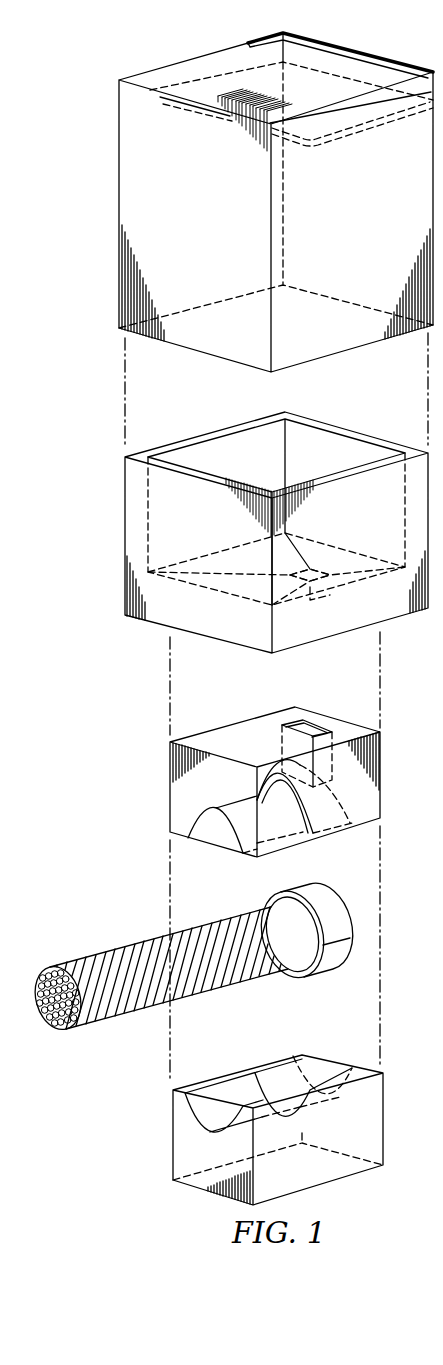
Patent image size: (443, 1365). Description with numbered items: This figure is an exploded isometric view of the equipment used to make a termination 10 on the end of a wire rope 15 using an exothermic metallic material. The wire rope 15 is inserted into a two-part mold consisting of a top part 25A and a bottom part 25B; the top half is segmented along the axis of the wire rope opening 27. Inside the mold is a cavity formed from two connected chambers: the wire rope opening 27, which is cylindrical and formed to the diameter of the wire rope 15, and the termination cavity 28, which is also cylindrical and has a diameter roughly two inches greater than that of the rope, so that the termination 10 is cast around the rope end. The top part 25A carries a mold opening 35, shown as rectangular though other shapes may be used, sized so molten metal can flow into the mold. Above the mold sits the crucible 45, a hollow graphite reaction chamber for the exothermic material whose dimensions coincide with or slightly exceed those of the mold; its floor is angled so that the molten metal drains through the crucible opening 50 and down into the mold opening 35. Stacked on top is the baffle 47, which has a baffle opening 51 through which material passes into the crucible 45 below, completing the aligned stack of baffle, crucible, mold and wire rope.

The termination 10 is at (323, 970).
The wire rope 15 is at (128, 1013).
The top part of mold 25A is at (180, 797).
The bottom part of mold 25B is at (180, 1138).
The wire rope opening 27 is at (236, 1092).
The termination cavity 28 is at (320, 1070).
The mold opening 35 is at (312, 722).
The crucible 45 is at (168, 615).
The baffle 47 is at (133, 203).
The crucible opening 50 is at (323, 612).
The baffle opening 51 is at (303, 57).